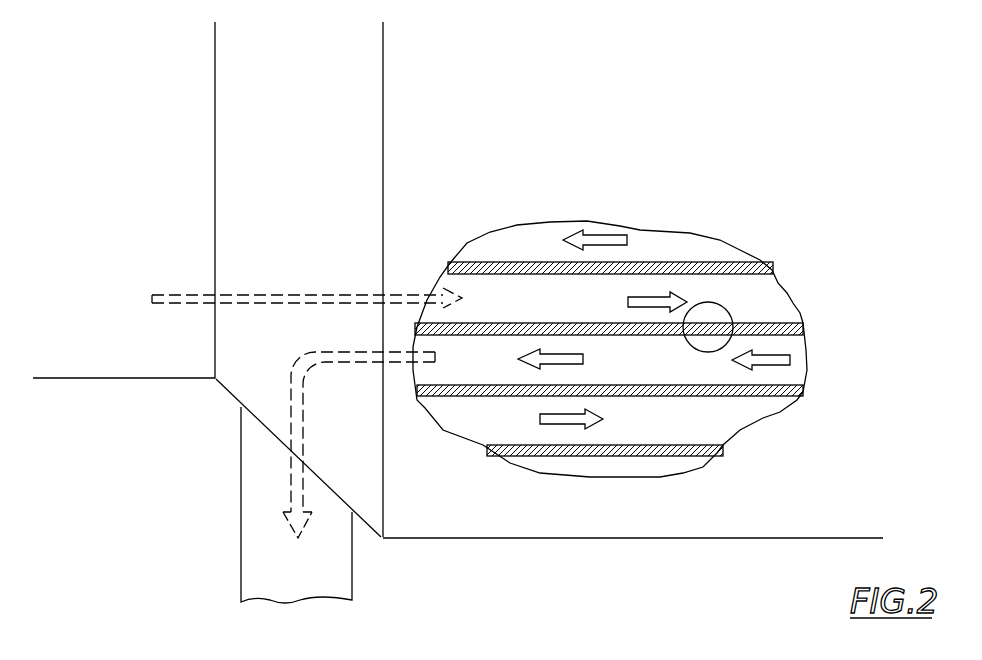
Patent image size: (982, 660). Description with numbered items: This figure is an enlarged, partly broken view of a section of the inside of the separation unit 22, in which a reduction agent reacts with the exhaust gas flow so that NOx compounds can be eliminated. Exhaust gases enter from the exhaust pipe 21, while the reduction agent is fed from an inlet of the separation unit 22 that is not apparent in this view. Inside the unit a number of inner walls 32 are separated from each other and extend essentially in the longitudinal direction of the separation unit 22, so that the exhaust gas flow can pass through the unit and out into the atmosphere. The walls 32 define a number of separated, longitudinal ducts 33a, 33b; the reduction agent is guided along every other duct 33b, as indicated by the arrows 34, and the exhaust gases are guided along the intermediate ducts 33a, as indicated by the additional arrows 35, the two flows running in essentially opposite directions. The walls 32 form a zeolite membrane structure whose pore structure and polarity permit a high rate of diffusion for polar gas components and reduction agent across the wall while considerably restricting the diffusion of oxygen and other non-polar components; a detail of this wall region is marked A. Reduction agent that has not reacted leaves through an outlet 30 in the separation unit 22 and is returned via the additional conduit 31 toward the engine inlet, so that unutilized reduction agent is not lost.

The exhaust pipe 21 is at (110, 364).
The separation unit 22 is at (797, 502).
The outlet 30 is at (287, 450).
The additional conduit 31 is at (263, 500).
The inner walls 32 is at (753, 262).
The ducts 33a is at (513, 302).
The ducts 33b is at (482, 356).
The arrows 34 is at (290, 525).
The additional arrows 35 is at (437, 300).
The region A is at (710, 302).